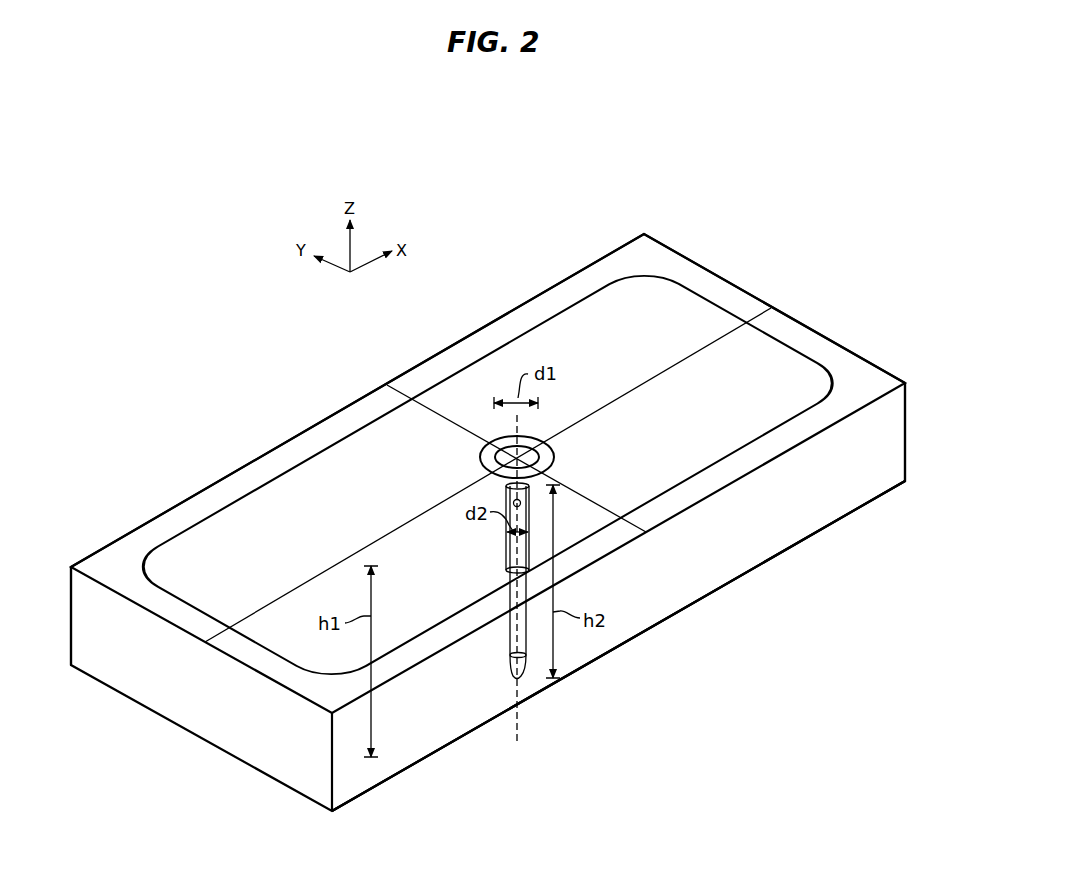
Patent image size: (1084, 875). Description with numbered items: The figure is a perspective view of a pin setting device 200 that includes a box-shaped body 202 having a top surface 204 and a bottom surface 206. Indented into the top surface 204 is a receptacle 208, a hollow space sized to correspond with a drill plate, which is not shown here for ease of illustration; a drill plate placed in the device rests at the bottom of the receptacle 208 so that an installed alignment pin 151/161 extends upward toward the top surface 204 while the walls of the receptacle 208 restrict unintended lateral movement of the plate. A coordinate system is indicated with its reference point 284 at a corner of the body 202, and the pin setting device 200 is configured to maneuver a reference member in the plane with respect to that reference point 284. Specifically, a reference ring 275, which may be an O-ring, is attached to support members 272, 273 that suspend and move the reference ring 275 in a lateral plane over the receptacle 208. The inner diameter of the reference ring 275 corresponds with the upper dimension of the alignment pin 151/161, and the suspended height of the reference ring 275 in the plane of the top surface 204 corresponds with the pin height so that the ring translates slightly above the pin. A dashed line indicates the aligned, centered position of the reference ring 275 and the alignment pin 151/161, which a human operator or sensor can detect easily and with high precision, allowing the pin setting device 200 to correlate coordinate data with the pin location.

The pin setting device 200 is at (724, 144).
The body 202 is at (720, 567).
The top surface 204 is at (844, 338).
The bottom surface 206 is at (851, 522).
The receptacle 208 is at (822, 393).
The reference point 284 is at (70, 564).
The support member 272 is at (604, 506).
The support member 273 is at (656, 376).
The reference ring 275 is at (484, 450).
The alignment pin 151 is at (467, 580).
The alignment pin 161 is at (505, 551).